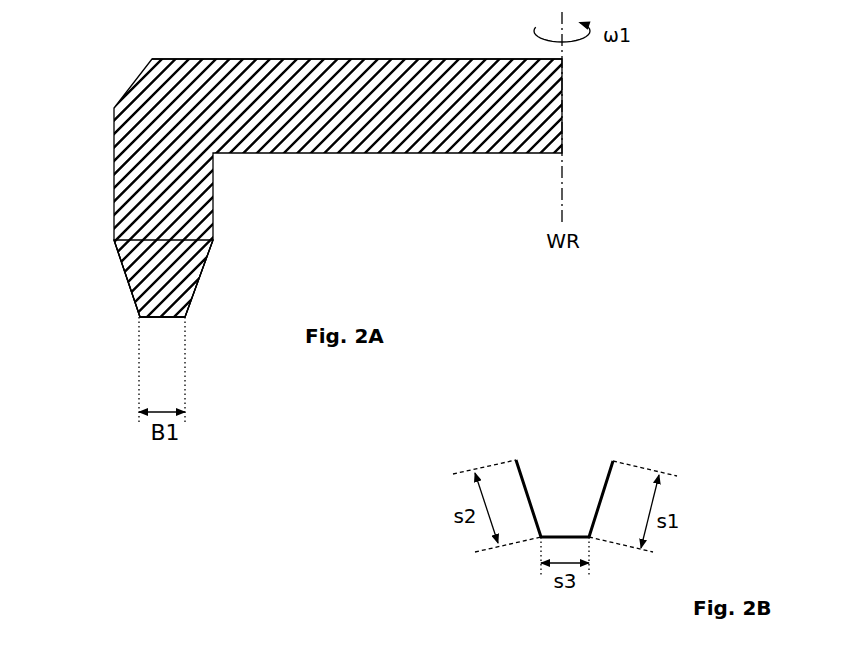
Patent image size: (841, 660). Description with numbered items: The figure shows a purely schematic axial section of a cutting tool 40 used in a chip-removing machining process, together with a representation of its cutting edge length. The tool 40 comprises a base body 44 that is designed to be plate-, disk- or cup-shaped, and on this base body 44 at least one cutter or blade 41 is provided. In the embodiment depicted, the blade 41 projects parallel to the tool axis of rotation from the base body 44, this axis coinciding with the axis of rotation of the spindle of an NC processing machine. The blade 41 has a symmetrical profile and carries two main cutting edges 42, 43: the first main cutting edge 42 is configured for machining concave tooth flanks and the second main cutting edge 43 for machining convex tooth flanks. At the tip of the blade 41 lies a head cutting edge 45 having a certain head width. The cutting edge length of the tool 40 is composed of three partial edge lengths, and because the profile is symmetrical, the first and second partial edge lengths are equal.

The cutting tool 40 is at (53, 54).
The blade 41 is at (85, 279).
The first main cutting edge 42 is at (134, 297).
The second main cutting edge 43 is at (197, 296).
The base body 44 is at (313, 59).
The head cutting edge 45 is at (167, 320).